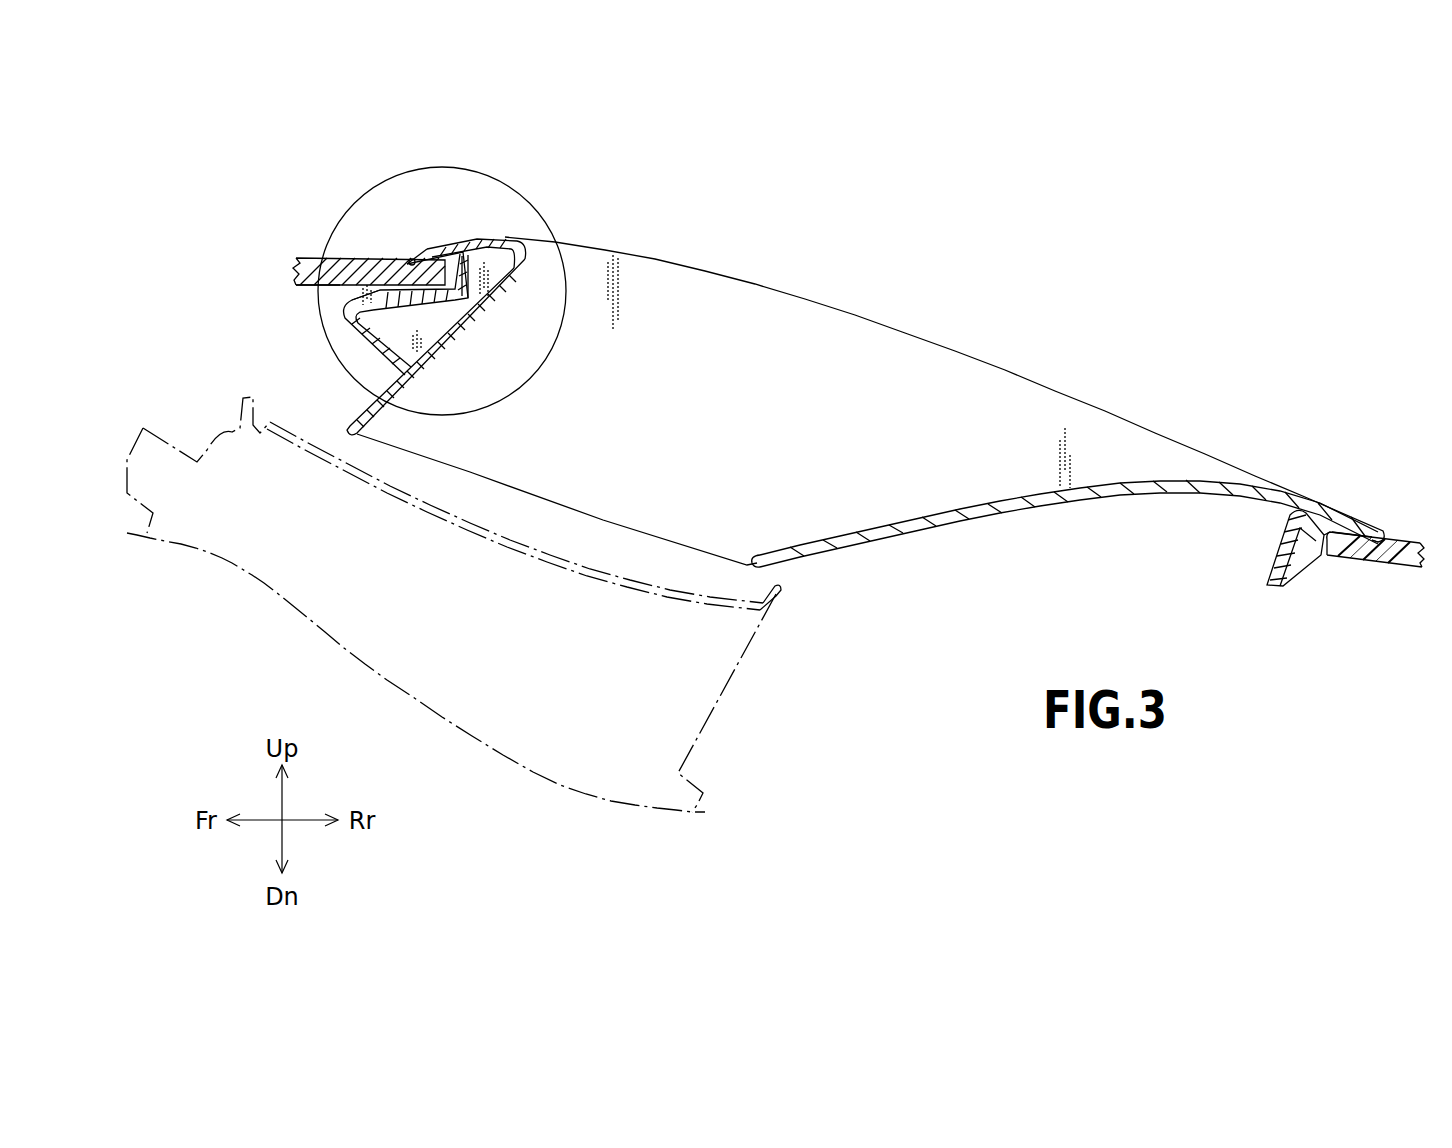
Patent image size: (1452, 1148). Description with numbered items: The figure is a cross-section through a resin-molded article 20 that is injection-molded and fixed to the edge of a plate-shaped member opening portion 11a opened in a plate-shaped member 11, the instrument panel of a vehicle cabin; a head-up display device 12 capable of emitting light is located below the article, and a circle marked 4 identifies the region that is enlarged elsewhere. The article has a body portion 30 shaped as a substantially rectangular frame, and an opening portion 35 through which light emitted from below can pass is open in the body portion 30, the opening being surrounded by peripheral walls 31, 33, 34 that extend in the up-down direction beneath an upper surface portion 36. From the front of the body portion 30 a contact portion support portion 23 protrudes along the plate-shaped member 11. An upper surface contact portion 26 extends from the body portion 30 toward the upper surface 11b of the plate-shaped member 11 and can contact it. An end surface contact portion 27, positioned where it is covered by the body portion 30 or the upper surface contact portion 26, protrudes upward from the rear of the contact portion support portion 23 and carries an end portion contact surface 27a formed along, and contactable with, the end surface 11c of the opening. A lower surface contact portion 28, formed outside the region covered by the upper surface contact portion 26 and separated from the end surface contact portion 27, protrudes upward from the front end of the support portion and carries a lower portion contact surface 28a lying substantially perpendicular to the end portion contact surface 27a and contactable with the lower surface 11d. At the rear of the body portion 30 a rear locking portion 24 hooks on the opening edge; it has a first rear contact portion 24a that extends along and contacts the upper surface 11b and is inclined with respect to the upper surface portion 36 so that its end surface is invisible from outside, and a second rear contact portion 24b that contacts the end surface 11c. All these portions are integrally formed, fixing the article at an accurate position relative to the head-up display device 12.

The detail view circle for FIG. 4 is at (498, 183).
The plate-shaped member 11 is at (833, 395).
The plate-shaped member opening portion 11a is at (1215, 563).
The upper surface 11b is at (307, 257).
The end surface 11c is at (482, 245).
The lower surface 11d is at (300, 285).
The head-up display device 12 is at (225, 568).
The resin-molded article 20 is at (842, 362).
The contact portion support portion 23 is at (440, 329).
The rear locking portion 24 is at (1344, 465).
The first rear contact portion 24a is at (1373, 471).
The second rear contact portion 24b is at (1278, 545).
The upper surface contact portion 26 is at (414, 260).
The end surface contact portion 27 is at (495, 312).
The end portion contact surface 27a is at (408, 258).
The lower surface contact portion 28 is at (343, 305).
The lower portion contact surface 28a is at (368, 262).
The body portion 30 is at (842, 362).
The peripheral wall 31 is at (372, 432).
The peripheral wall 33 is at (850, 364).
The peripheral wall 34 is at (1000, 515).
The opening portion 35 is at (523, 525).
The upper surface portion 36 is at (728, 272).